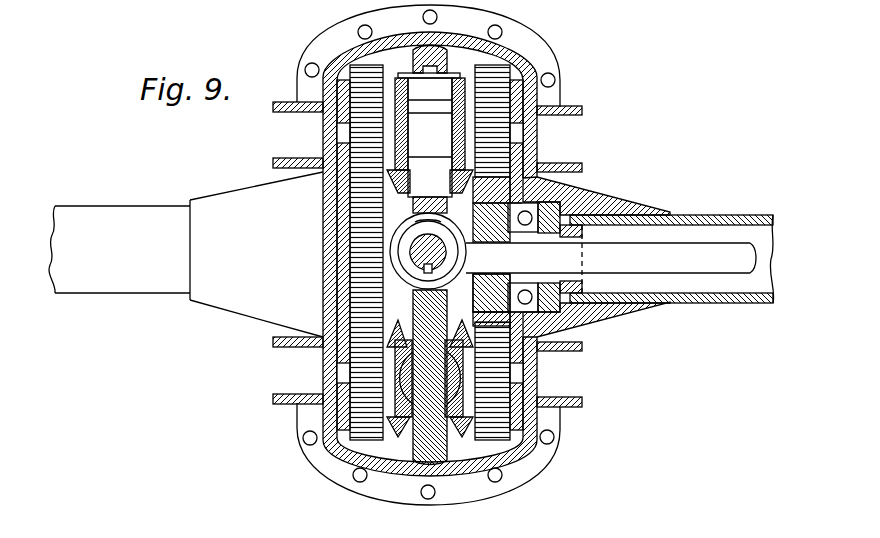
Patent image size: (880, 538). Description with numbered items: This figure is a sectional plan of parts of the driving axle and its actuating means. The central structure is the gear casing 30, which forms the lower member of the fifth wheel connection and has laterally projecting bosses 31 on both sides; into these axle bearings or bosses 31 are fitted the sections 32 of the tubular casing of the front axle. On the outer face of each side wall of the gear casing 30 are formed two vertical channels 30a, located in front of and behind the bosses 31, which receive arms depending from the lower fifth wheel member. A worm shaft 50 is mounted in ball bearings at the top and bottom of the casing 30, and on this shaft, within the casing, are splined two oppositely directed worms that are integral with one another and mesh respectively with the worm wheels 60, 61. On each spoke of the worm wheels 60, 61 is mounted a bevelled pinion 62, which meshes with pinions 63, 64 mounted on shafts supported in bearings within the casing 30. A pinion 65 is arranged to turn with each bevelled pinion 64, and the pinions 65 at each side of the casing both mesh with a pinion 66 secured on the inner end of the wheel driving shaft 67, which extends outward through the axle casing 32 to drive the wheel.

The gear casing 30 is at (323, 248).
The vertical channels 30a is at (558, 145).
The laterally projecting bosses 31 is at (222, 293).
The sections of the tubular casing 32 is at (733, 202).
The worm shaft 50 is at (443, 250).
The worm wheel 60 is at (447, 65).
The worm wheel 61 is at (417, 453).
The bevelled pinion 62 is at (450, 428).
The pinion 63 is at (387, 428).
The bevelled pinion 64 is at (520, 442).
The pinion 65 is at (533, 408).
The pinion 66 is at (493, 283).
The wheel driving shaft 67 is at (723, 268).